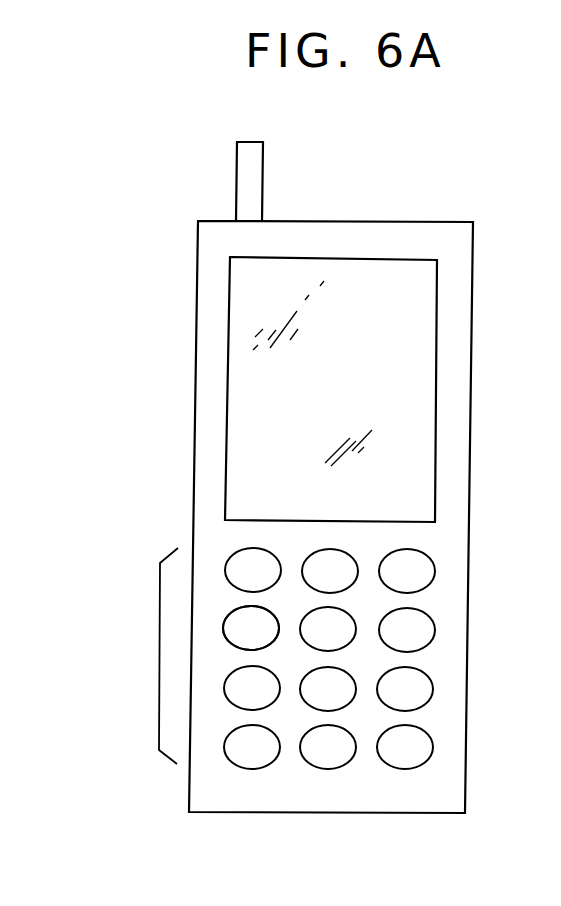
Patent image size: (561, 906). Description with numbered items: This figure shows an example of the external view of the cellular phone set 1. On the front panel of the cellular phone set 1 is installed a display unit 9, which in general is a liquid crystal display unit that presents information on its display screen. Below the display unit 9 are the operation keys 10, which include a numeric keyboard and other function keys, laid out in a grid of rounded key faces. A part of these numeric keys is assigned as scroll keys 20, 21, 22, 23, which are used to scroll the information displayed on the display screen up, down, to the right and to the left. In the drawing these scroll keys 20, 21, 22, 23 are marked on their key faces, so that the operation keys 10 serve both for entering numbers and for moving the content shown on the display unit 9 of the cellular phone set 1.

The cellular phone set 1 is at (410, 222).
The display unit 9 is at (437, 387).
The operation keys 10 is at (160, 642).
The scroll key 20 is at (353, 556).
The scroll key 21 is at (273, 646).
The scroll key 22 is at (430, 620).
The scroll key 23 is at (350, 700).